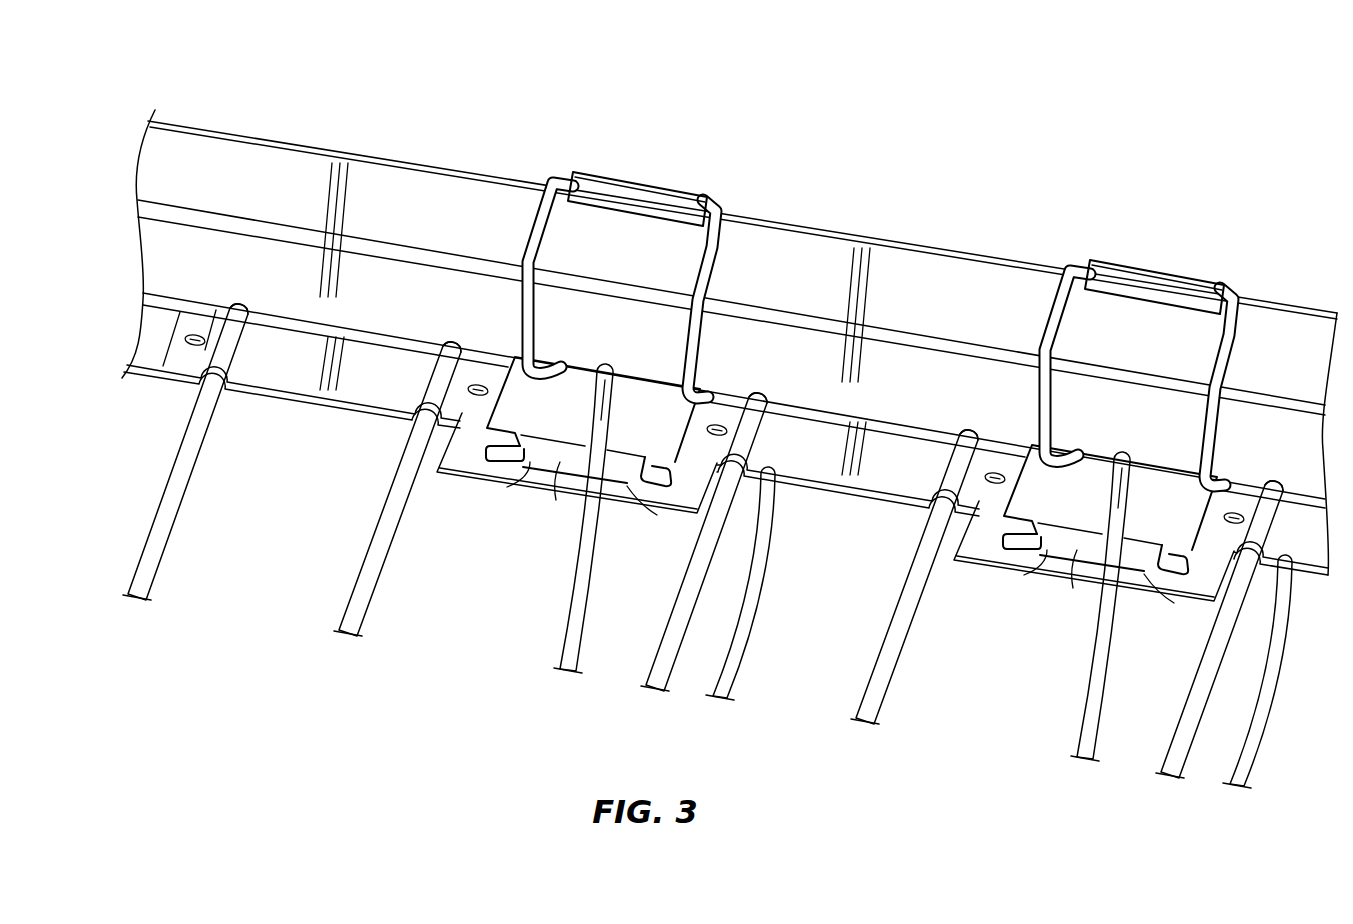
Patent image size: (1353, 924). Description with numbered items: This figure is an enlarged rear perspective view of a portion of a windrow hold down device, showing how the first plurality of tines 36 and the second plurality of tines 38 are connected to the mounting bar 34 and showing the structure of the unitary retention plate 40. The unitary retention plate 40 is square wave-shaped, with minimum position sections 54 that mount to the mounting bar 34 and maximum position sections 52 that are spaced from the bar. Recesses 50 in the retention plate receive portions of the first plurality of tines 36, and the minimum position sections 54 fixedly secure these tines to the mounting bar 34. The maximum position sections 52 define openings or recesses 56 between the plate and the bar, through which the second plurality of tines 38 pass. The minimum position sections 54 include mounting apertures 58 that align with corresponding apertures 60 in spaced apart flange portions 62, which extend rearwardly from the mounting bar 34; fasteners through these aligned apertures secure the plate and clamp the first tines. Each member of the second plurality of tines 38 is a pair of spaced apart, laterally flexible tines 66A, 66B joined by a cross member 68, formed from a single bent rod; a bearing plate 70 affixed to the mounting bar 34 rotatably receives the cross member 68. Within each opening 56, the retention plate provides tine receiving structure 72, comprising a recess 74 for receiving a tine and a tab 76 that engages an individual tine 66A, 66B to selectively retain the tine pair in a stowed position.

The mounting bar 34 is at (936, 277).
The first plurality of tines 36 is at (178, 532).
The second plurality of tines 38 is at (568, 620).
The unitary retention plate 40 is at (520, 503).
The recesses 50 is at (232, 353).
The maximum position sections 52 is at (580, 487).
The minimum position sections 54 is at (365, 380).
The openings or recesses 56 is at (556, 490).
The mounting apertures 58 is at (490, 393).
The apertures 60 is at (170, 372).
The flange portions 62 is at (148, 353).
The spaced apart tine 66A is at (562, 650).
The spaced apart tine 66B is at (750, 655).
The cross member 68 is at (716, 206).
The bearing plate 70 is at (650, 185).
The tine receiving structure 72 is at (634, 461).
The recess 74 is at (498, 468).
The tab 76 is at (518, 495).